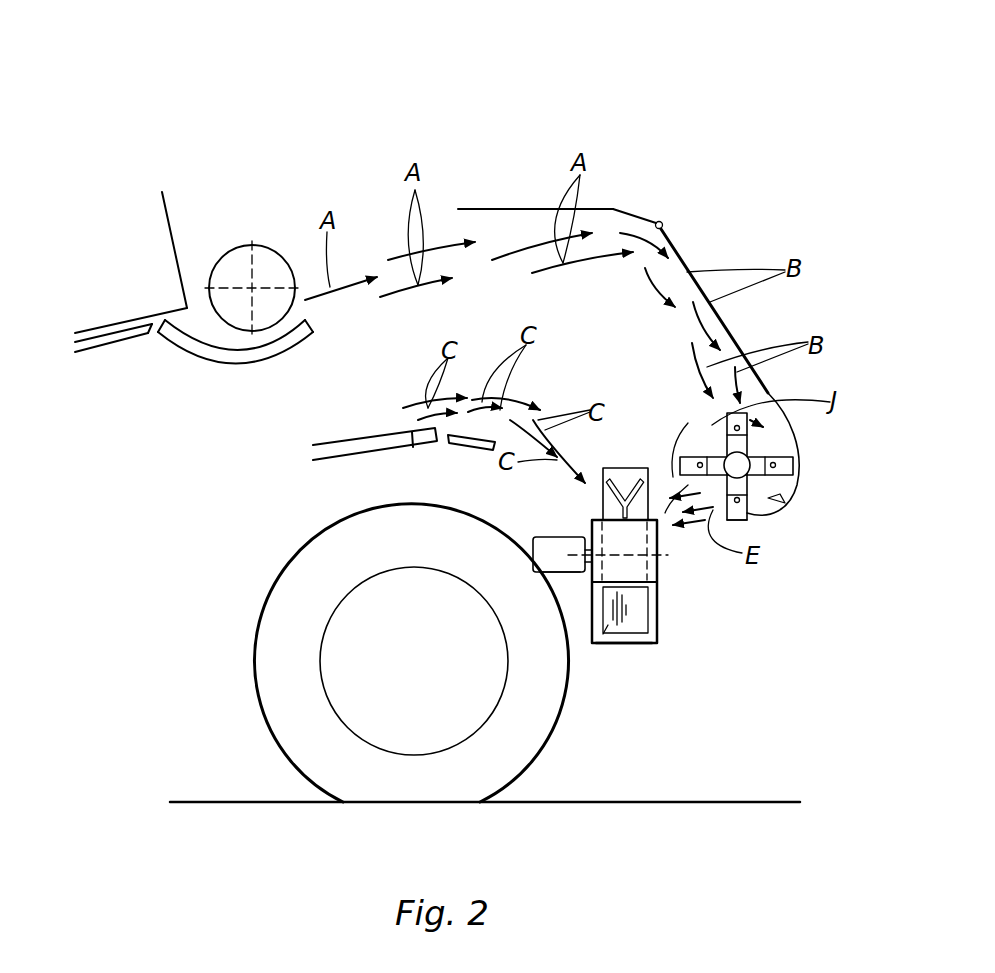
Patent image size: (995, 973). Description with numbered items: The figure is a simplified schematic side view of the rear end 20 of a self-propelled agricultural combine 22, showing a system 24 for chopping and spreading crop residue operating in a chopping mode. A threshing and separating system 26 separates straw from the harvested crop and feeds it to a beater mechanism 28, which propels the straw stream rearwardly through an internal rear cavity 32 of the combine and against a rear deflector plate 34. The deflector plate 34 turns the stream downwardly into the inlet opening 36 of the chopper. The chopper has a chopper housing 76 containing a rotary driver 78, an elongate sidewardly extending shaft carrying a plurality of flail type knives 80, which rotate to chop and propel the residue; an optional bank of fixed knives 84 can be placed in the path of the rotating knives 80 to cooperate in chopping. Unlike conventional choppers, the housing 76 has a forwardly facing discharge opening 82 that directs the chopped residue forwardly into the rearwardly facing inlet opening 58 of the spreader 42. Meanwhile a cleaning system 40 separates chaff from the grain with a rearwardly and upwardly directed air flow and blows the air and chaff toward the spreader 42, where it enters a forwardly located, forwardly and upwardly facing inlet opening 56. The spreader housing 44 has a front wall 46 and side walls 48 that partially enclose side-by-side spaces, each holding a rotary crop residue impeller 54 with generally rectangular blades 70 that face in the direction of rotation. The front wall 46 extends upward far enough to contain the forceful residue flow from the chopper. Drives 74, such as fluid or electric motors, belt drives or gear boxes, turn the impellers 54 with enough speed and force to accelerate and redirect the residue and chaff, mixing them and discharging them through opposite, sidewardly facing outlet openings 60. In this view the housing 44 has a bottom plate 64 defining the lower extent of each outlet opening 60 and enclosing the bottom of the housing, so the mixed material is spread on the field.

The rear end 20 is at (508, 208).
The agricultural combine 22 is at (792, 115).
The system for chopping and spreading crop residue 24 is at (800, 432).
The threshing and separating system 26 is at (167, 210).
The beater mechanism 28 is at (267, 330).
The internal rear cavity 32 is at (617, 378).
The rear deflector plate 34 is at (730, 328).
The inlet opening 36 is at (705, 412).
The cleaning system 40 is at (332, 462).
The spreader 42 is at (657, 640).
The spreader housing 44 is at (657, 575).
The front wall 46 is at (585, 527).
The side wall 48 is at (617, 534).
The rotary crop residue impeller 54 is at (657, 615).
The inlet opening 56 is at (598, 488).
The inlet opening 58 is at (657, 482).
The outlet opening 60 is at (638, 642).
The bottom plate 64 is at (645, 645).
The blade 70 is at (602, 645).
The drive 74 is at (562, 572).
The chopper housing 76 is at (748, 513).
The rotary driver 78 is at (755, 451).
The knives 80 is at (764, 390).
The discharge opening 82 is at (672, 508).
The bank of fixed knives 84 is at (787, 496).